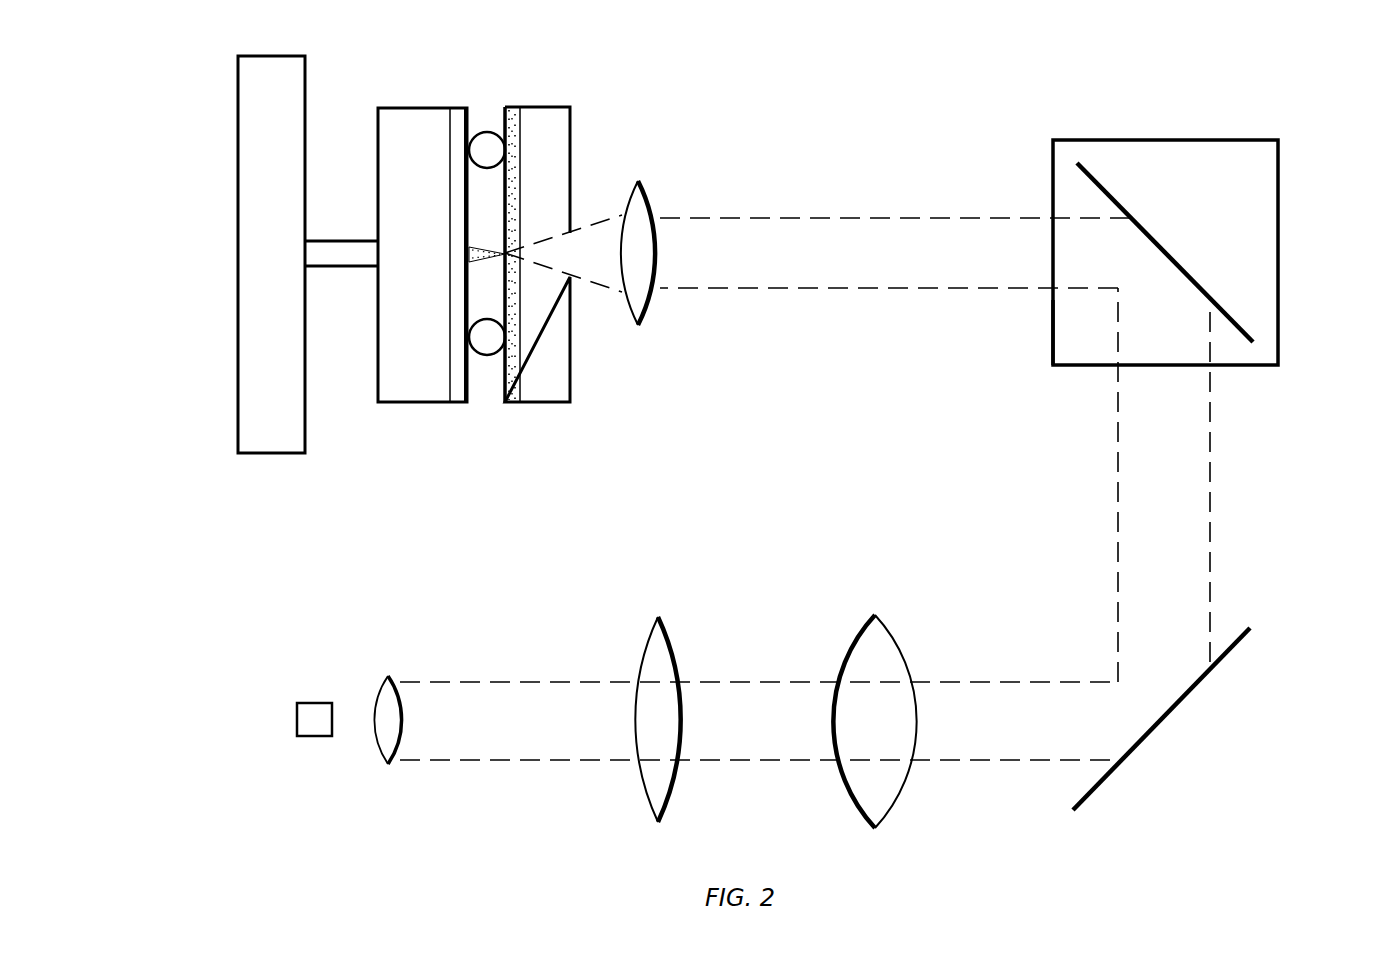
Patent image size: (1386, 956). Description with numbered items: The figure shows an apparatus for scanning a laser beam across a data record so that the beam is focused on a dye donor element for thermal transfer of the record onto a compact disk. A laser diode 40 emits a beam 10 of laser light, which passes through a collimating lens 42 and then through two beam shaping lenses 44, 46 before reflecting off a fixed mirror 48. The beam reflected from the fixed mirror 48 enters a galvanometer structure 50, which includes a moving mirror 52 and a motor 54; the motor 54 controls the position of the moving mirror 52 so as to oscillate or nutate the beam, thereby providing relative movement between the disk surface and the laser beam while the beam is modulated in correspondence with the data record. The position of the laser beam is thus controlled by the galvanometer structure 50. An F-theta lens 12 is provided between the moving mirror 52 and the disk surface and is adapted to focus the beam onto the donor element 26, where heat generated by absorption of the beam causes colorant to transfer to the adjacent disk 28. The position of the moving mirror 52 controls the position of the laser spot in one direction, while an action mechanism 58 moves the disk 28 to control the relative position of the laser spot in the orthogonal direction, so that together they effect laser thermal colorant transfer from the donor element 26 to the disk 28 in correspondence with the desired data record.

The laser beam 10 is at (512, 680).
The F-theta lens 12 is at (648, 310).
The donor element 26 is at (542, 95).
The disk 28 is at (430, 88).
The laser diode 40 is at (310, 703).
The collimating lens 42 is at (395, 678).
The beam shaping lens 44 is at (678, 650).
The beam shaping lens 46 is at (905, 655).
The fixed mirror 48 is at (1132, 757).
The galvanometer structure 50 is at (1283, 243).
The moving mirror 52 is at (1183, 268).
The motor 54 is at (1050, 340).
The action mechanism 58 is at (245, 257).